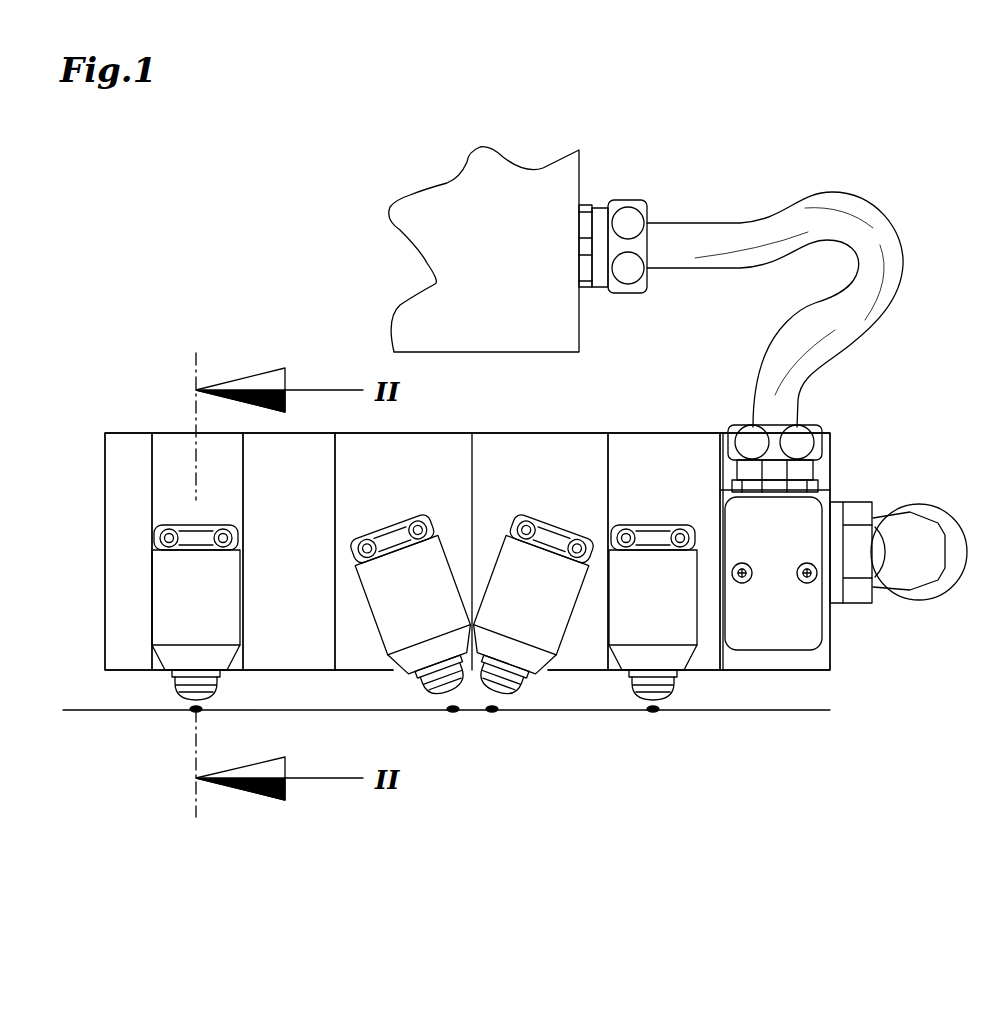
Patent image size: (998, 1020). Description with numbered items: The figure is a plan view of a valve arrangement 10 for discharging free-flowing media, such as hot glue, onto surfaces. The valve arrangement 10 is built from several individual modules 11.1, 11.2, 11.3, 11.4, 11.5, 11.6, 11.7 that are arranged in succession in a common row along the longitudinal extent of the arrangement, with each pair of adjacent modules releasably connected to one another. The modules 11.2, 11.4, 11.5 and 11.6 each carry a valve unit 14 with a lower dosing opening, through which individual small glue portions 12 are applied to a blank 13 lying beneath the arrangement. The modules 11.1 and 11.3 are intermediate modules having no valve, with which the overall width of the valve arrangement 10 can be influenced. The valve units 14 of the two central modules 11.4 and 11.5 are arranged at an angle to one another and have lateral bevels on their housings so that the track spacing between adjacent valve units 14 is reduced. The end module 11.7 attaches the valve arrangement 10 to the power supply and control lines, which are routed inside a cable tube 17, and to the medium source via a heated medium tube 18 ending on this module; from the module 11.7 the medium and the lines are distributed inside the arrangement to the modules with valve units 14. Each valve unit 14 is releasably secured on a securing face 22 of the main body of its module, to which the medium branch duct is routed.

The valve arrangement 10 is at (133, 310).
The individual module 11.1 is at (130, 433).
The individual module 11.2 is at (175, 433).
The individual module 11.3 is at (300, 433).
The individual module 11.4 is at (415, 433).
The individual module 11.5 is at (545, 433).
The individual module 11.6 is at (660, 433).
The individual module 11.7 is at (833, 460).
The glue portion 12 is at (453, 714).
The blank 13 is at (748, 712).
The valve unit 14 is at (172, 613).
The cable tube 17 is at (868, 292).
The medium tube 18 is at (912, 555).
The securing face 22 is at (718, 658).